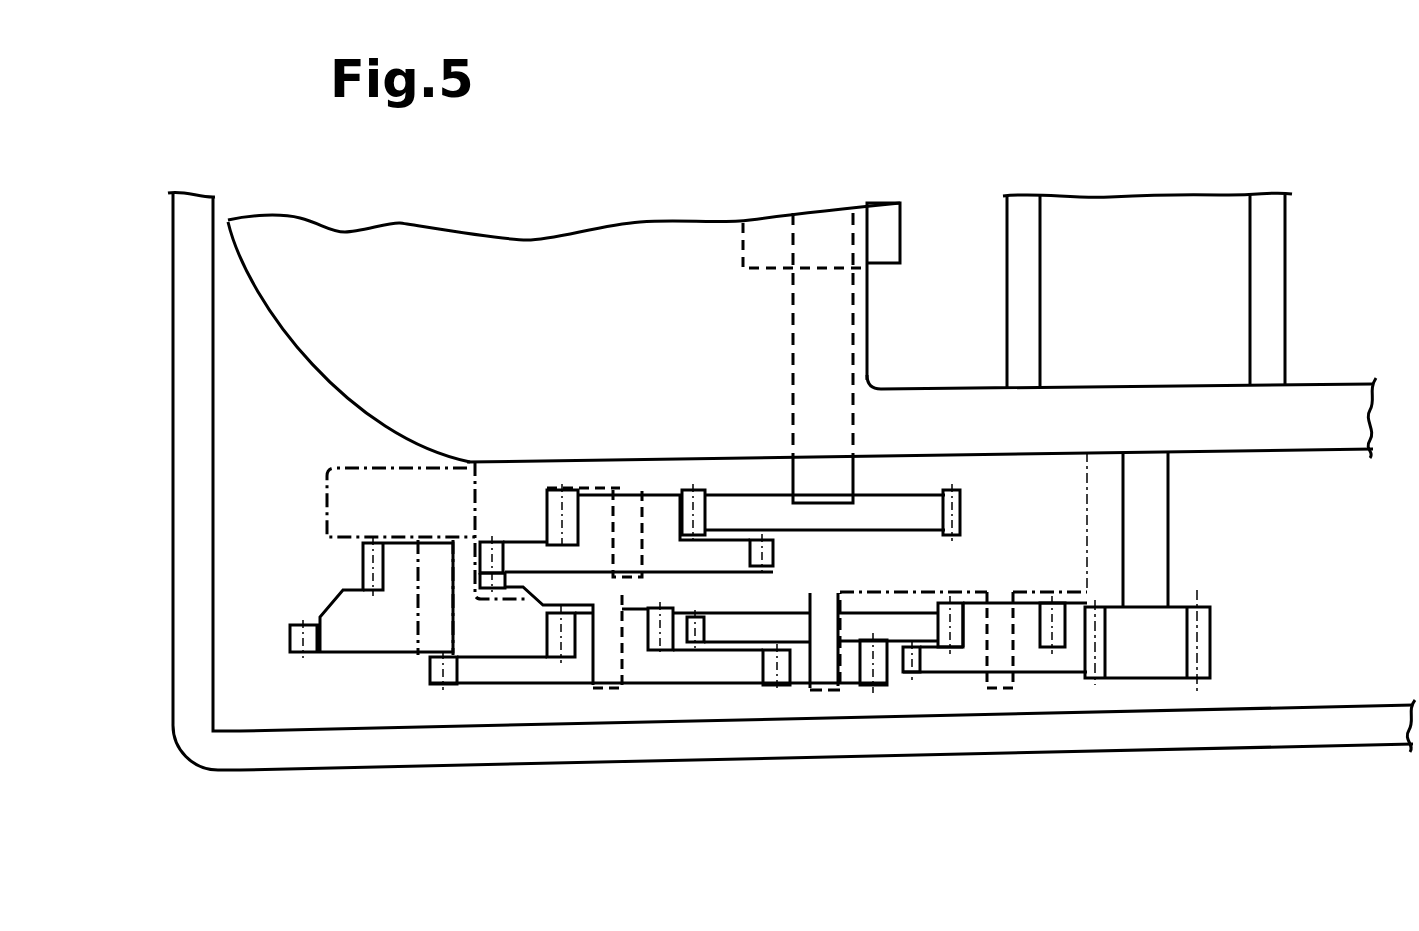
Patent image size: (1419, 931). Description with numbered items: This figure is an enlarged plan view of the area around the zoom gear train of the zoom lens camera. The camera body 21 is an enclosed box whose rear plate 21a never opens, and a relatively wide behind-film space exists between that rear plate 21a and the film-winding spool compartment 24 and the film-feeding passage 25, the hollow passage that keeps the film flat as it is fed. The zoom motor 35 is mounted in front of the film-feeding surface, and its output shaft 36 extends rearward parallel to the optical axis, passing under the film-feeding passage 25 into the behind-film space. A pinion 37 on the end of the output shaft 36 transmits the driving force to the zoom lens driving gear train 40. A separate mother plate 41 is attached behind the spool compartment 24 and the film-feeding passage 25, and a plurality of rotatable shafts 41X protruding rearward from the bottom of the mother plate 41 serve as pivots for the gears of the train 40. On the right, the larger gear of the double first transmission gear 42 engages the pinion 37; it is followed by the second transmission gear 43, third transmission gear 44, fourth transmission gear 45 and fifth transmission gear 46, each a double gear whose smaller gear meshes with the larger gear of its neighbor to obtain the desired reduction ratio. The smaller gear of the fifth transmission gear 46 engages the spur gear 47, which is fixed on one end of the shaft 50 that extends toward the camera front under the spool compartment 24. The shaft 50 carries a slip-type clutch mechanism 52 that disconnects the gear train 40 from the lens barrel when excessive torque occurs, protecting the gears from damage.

The camera body 21 is at (170, 363).
The rear plate 21a is at (503, 748).
The film-winding spool compartment 24 is at (555, 265).
The film-feeding passage 25 is at (1287, 440).
The zoom motor 35 is at (1235, 277).
The output shaft 36 is at (1168, 495).
The pinion 37 is at (1150, 652).
The zoom lens driving gear train 40 is at (285, 700).
The mother plate 41 is at (352, 508).
The rotatable shaft 41X is at (622, 530).
The first transmission gear 42 is at (1042, 650).
The second transmission gear 43 is at (850, 672).
The third transmission gear 44 is at (648, 660).
The fourth transmission gear 45 is at (383, 630).
The fifth transmission gear 46 is at (662, 515).
The spur gear 47 is at (890, 520).
The shaft 50 is at (840, 478).
The clutch mechanism 52 is at (890, 241).